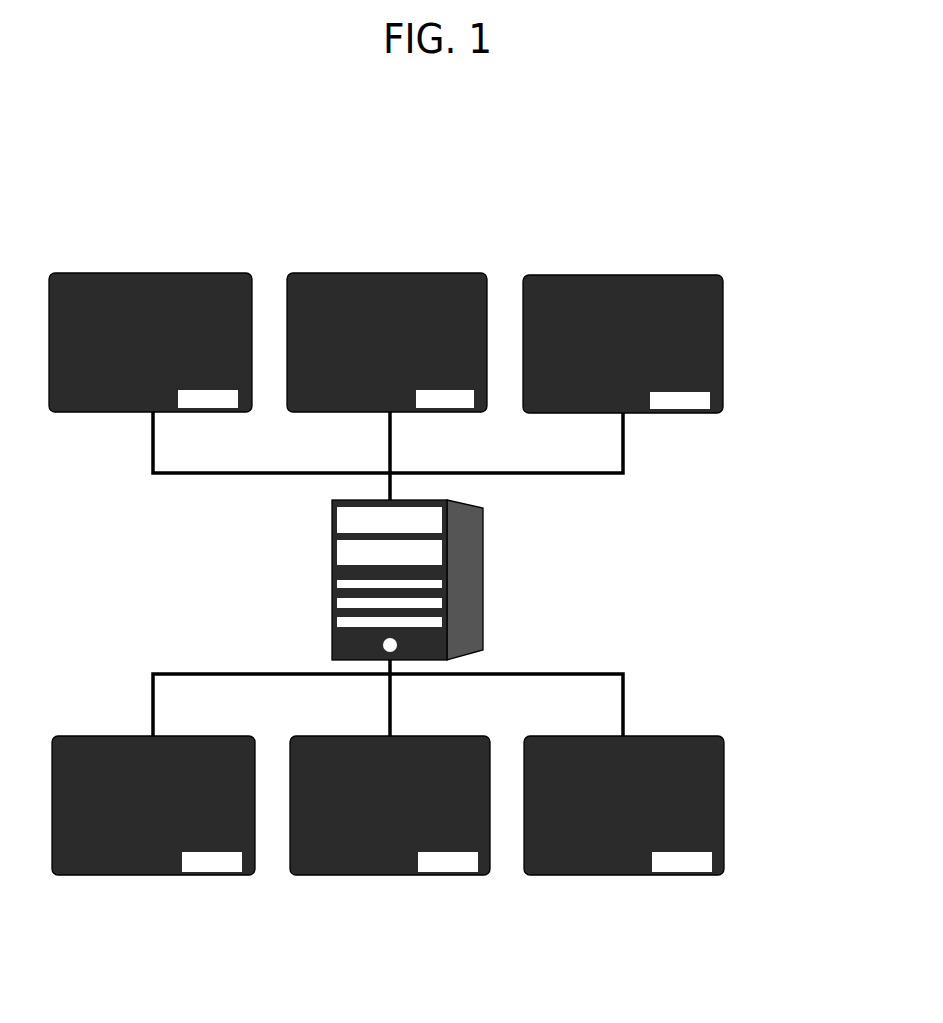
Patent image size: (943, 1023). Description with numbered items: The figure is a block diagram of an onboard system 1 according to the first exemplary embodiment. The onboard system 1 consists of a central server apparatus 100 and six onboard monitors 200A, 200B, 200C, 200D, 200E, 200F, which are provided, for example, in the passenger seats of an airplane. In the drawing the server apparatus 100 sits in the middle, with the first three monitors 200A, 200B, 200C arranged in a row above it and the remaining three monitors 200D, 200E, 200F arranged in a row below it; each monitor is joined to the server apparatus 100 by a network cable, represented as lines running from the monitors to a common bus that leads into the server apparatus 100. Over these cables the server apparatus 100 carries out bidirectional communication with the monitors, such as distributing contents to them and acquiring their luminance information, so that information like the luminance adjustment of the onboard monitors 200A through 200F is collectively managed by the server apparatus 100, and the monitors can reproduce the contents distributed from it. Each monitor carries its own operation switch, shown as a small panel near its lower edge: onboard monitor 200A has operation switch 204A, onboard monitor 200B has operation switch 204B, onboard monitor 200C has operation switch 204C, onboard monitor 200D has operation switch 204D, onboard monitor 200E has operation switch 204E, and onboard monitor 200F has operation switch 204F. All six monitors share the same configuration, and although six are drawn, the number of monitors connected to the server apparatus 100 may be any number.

The onboard system 1 is at (768, 220).
The server apparatus 100 is at (332, 537).
The onboard monitor 200A is at (92, 278).
The onboard monitor 200B is at (332, 278).
The onboard monitor 200C is at (565, 282).
The onboard monitor 200D is at (110, 877).
The onboard monitor 200E is at (352, 877).
The onboard monitor 200F is at (587, 877).
The operation switch 204A is at (215, 399).
The operation switch 204B is at (452, 398).
The operation switch 204C is at (682, 398).
The operation switch 204D is at (217, 862).
The operation switch 204E is at (459, 862).
The operation switch 204F is at (693, 862).